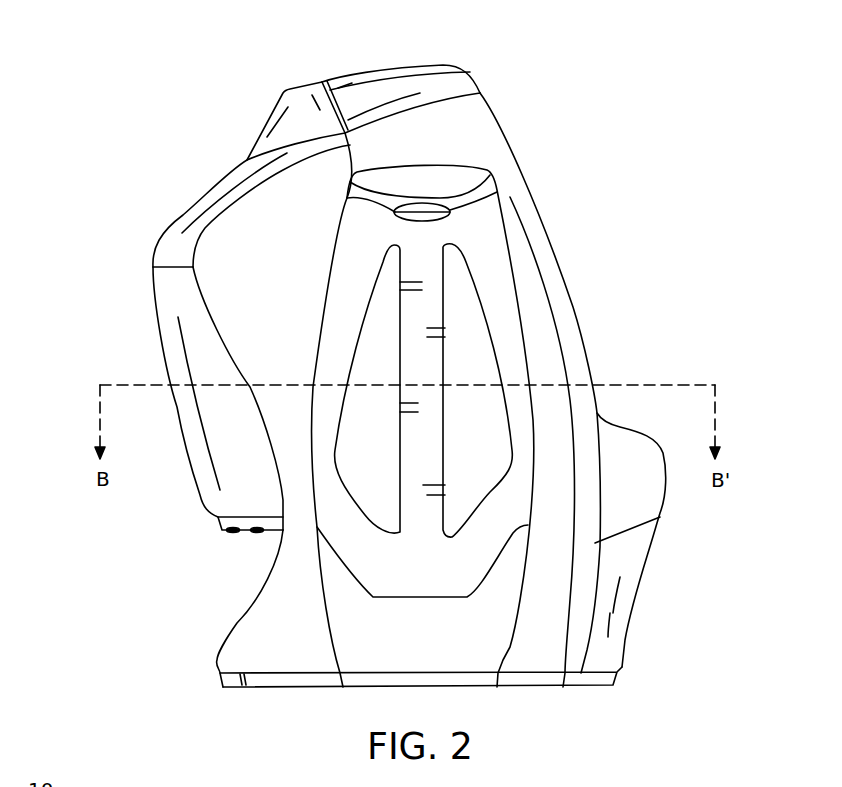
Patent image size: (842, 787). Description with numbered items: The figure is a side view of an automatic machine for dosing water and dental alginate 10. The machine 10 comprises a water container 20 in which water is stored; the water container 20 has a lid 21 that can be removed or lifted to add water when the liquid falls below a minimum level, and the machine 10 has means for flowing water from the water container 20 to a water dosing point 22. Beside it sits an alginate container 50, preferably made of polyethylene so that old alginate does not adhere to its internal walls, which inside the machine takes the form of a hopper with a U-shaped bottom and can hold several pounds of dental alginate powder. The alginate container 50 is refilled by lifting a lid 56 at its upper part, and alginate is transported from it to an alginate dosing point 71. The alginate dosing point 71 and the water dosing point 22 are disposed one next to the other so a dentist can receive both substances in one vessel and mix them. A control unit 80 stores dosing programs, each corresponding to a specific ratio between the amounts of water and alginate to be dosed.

The automatic machine for dosing water and dental alginate 10 is at (116, 132).
The water container 20 is at (438, 581).
The lid 21 is at (450, 183).
The water dosing point 22 is at (258, 531).
The alginate container 50 is at (457, 135).
The lid 56 is at (407, 64).
The alginate dosing point 71 is at (231, 531).
The control unit 80 is at (220, 183).